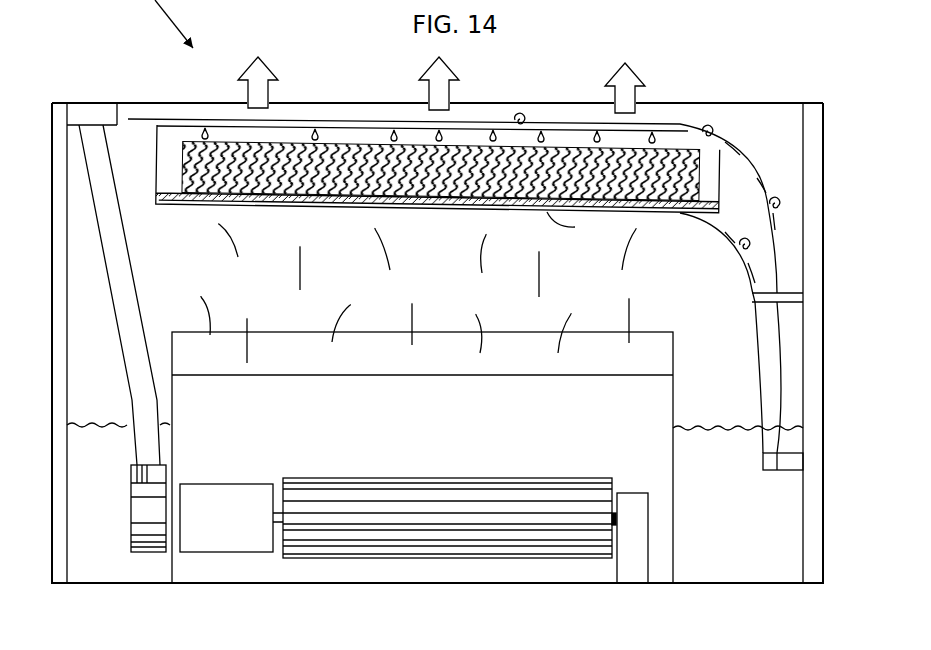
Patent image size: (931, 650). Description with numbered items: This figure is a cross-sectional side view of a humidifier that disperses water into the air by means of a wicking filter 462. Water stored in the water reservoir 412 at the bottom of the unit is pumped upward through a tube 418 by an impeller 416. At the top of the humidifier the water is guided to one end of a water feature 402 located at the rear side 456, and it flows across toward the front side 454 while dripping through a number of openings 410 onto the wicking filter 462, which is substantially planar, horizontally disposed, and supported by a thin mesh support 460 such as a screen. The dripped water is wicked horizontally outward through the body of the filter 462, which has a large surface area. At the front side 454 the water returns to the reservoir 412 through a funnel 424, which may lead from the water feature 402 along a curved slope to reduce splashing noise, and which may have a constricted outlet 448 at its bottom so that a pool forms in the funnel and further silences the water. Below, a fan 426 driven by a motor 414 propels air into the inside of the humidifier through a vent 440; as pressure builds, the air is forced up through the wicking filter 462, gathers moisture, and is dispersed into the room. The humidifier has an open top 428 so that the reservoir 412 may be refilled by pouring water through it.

The water feature 402 is at (500, 111).
The openings 410 is at (394, 128).
The water reservoir 412 is at (746, 533).
The motor 414 is at (222, 502).
The impeller 416 is at (143, 508).
The tube 418 is at (123, 283).
The funnel 424 is at (746, 360).
The fan 426 is at (487, 490).
The open top 428 is at (668, 94).
The vent 440 is at (378, 362).
The constricted outlet 448 is at (783, 475).
The front side 454 is at (806, 82).
The rear side 456 is at (85, 91).
The mesh support 460 is at (715, 196).
The wicking filter 462 is at (185, 152).